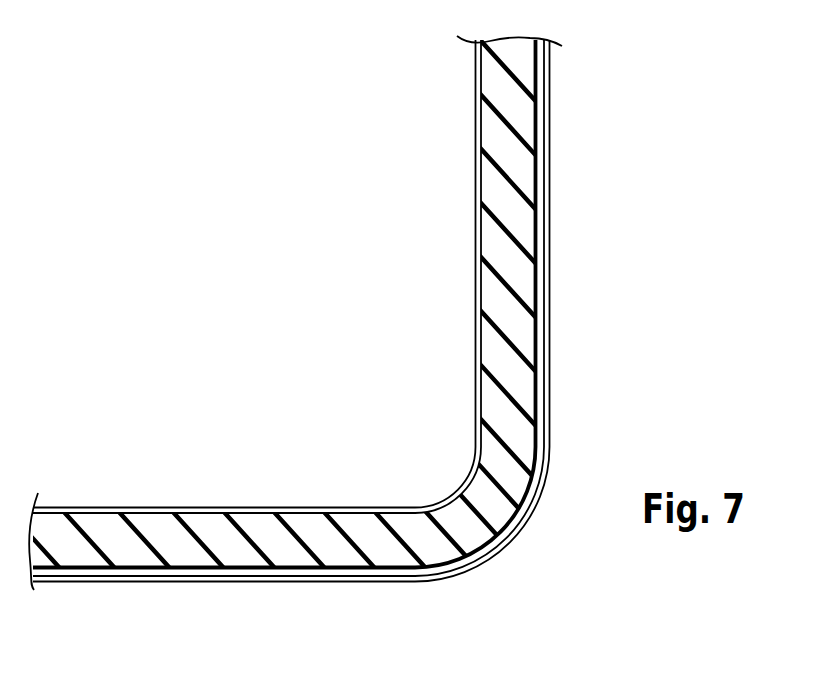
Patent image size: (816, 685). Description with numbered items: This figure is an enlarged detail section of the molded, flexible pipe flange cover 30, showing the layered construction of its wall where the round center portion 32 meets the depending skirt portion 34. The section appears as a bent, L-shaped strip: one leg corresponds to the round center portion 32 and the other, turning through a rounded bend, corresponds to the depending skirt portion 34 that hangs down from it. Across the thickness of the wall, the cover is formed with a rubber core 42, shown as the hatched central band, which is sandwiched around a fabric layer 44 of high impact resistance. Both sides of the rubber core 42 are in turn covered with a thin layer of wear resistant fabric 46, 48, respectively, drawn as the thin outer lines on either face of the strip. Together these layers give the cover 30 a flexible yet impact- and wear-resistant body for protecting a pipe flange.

The pipe flange cover 30 is at (408, 324).
The round center portion 32 is at (578, 177).
The depending skirt portion 34 is at (238, 608).
The rubber core 42 is at (428, 538).
The fabric layer 44 is at (537, 379).
The wear resistant fabric layer 46 is at (550, 81).
The wear resistant fabric layer 48 is at (476, 120).